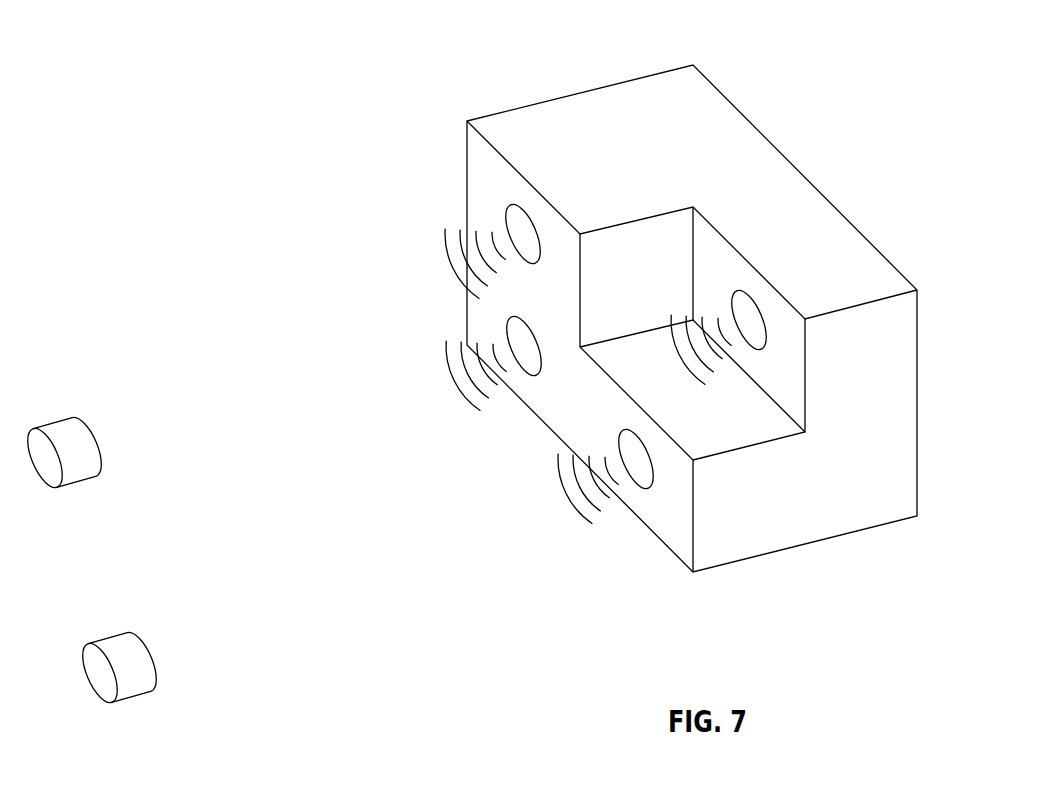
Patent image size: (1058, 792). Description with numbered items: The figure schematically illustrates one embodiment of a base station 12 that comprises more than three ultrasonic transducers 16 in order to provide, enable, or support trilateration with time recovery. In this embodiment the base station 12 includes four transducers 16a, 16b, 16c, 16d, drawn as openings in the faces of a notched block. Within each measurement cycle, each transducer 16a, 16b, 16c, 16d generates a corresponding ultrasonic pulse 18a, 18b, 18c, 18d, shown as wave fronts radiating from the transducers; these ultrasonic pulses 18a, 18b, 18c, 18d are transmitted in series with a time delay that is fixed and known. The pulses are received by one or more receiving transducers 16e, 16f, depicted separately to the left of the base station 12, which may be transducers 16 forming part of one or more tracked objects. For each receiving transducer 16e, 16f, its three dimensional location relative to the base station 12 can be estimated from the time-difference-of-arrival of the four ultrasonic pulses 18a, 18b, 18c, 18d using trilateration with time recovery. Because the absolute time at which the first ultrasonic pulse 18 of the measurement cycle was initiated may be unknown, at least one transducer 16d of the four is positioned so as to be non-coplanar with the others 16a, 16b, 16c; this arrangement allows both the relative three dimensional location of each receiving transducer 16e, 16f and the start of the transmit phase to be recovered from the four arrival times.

The base station 12 is at (624, 47).
The transducers 16 is at (466, 432).
The first transducer 16a is at (502, 205).
The second transducer 16b is at (503, 321).
The third transducer 16c is at (621, 424).
The fourth transducer 16d is at (734, 286).
The receiving transducer 16e is at (101, 427).
The receiving transducer 16f is at (156, 650).
The ultrasonic pulse 18 is at (589, 422).
The first ultrasonic pulse 18a is at (441, 256).
The second ultrasonic pulse 18b is at (449, 398).
The third ultrasonic pulse 18c is at (567, 510).
The fourth ultrasonic pulse 18d is at (692, 387).